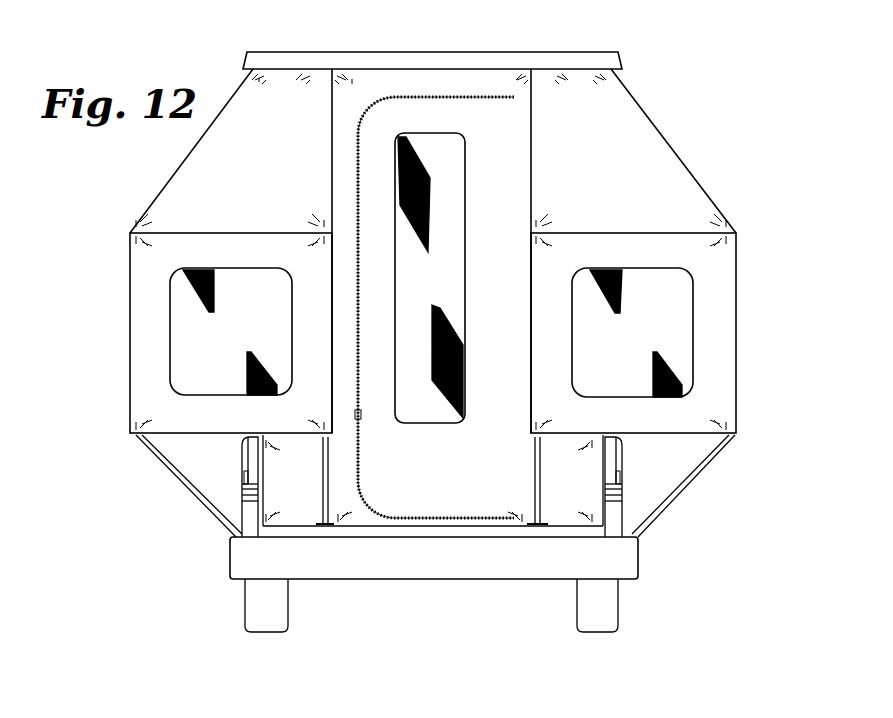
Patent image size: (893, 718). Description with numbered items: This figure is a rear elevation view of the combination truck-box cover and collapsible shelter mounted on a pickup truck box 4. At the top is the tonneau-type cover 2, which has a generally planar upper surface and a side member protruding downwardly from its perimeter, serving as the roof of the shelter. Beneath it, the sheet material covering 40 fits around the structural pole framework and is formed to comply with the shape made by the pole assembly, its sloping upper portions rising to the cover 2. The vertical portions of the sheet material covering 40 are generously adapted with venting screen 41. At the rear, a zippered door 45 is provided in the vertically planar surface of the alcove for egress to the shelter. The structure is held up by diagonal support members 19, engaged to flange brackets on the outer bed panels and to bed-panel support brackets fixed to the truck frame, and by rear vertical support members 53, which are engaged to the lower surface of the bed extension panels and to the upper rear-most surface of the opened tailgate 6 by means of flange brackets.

The tonneau-type cover 2 is at (316, 60).
The pickup truck box 4 is at (224, 491).
The tailgate 6 is at (398, 533).
The diagonal support member 19 is at (187, 497).
The sheet material covering 40 is at (195, 180).
The venting screen 41 is at (193, 338).
The zippered door 45 is at (440, 97).
The rear vertical support member 53 is at (323, 473).